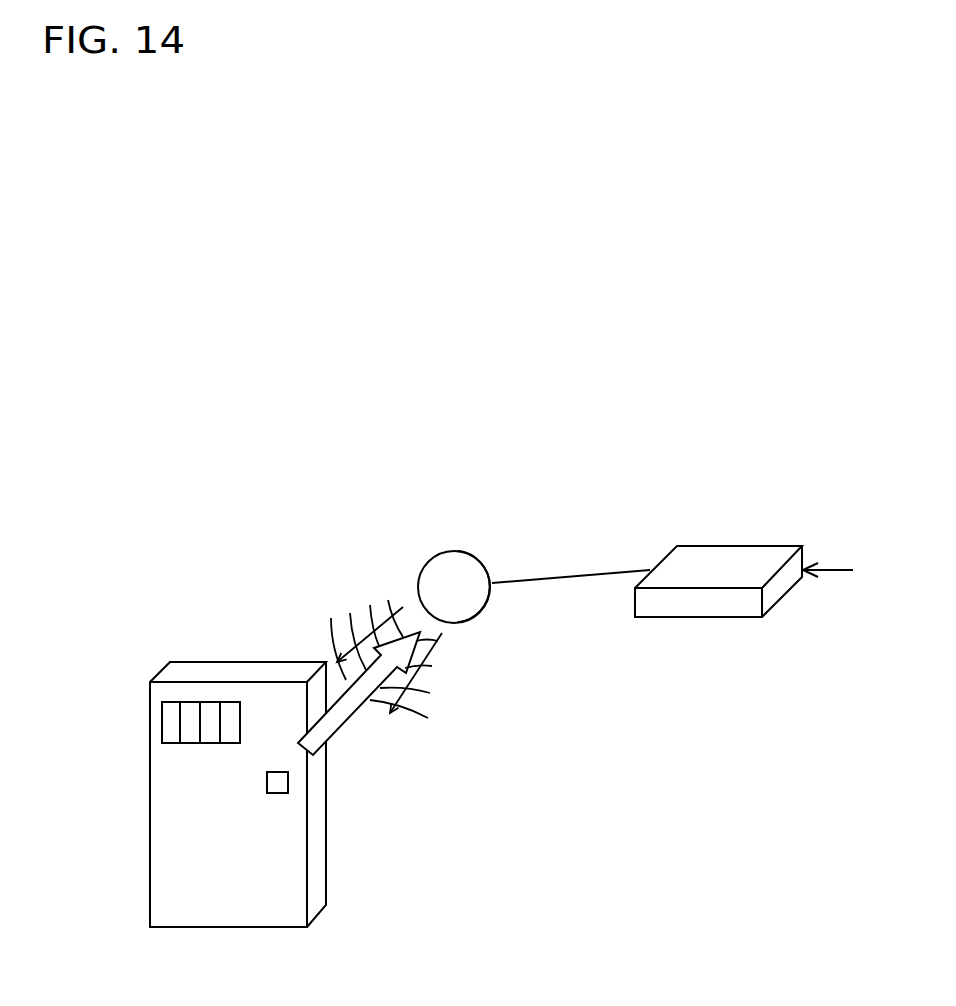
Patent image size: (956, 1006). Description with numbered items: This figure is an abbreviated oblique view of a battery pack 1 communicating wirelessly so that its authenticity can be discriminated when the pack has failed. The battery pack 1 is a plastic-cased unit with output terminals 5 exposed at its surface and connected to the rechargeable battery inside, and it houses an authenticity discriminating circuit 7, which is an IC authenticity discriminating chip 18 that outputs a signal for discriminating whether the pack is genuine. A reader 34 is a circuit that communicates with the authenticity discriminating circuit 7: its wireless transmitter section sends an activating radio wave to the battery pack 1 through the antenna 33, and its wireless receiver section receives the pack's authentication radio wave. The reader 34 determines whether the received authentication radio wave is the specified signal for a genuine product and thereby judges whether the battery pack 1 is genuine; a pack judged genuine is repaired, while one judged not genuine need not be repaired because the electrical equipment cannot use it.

The battery pack 1 is at (145, 657).
The output terminals 5 is at (186, 712).
The authenticity discriminating circuit 7 is at (292, 782).
The authenticity discriminating chip 18 is at (277, 793).
The antenna 33 is at (478, 617).
The reader 34 is at (697, 548).